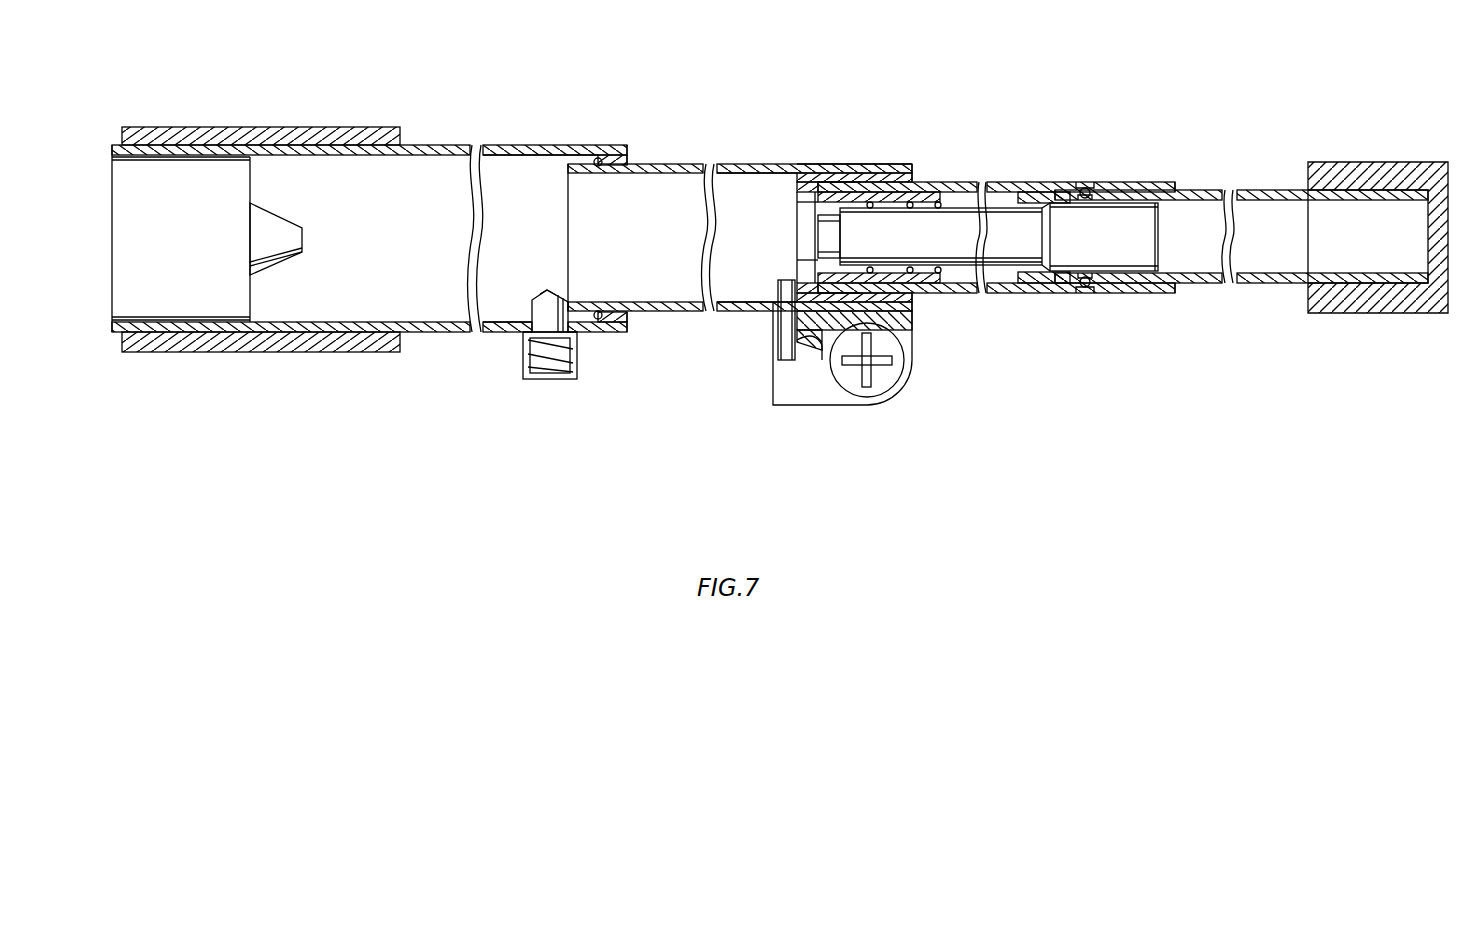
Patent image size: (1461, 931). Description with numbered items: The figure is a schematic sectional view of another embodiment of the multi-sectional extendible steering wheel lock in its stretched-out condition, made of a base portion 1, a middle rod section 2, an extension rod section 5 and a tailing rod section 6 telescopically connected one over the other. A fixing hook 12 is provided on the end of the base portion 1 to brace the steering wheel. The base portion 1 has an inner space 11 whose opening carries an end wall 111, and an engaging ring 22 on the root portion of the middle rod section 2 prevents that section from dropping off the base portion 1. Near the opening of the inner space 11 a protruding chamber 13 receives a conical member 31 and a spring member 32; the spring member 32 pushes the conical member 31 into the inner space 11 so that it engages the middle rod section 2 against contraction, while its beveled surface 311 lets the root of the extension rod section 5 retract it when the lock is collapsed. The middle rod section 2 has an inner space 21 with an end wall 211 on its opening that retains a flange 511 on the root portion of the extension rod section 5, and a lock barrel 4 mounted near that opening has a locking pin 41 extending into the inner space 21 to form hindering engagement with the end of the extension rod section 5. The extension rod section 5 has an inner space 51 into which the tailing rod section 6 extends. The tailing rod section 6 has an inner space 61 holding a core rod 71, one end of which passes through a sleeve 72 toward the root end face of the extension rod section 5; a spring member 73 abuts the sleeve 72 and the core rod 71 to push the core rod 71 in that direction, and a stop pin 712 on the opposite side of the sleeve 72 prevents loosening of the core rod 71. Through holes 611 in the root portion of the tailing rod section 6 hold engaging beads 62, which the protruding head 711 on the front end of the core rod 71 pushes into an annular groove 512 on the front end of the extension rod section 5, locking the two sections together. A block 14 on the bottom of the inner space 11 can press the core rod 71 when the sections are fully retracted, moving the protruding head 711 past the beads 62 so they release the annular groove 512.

The base portion 1 is at (432, 146).
The inner space 11 is at (505, 185).
The end wall 111 is at (618, 157).
The fixing hook 12 is at (293, 130).
The protruding chamber 13 is at (525, 342).
The block 14 is at (278, 242).
The middle rod section 2 is at (680, 163).
The inner space 21 is at (731, 205).
The end wall 211 is at (840, 166).
The engaging ring 22 is at (597, 157).
The conical member 31 is at (540, 310).
The beveled surface 311 is at (551, 291).
The spring member 32 is at (555, 362).
The lock barrel 4 is at (870, 362).
The locking pin 41 is at (787, 318).
The extension rod section 5 is at (995, 185).
The inner space 51 is at (1003, 190).
The flange 511 is at (803, 180).
The annular groove 512 is at (1095, 189).
The tailing rod section 6 is at (1255, 192).
The inner space 61 is at (1260, 240).
The through holes 611 is at (1096, 198).
The engaging beads 62 is at (1082, 188).
The core rod 71 is at (988, 245).
The protruding head 711 is at (1105, 250).
The stop pin 712 is at (939, 202).
The sleeve 72 is at (930, 279).
The spring member 73 is at (842, 177).